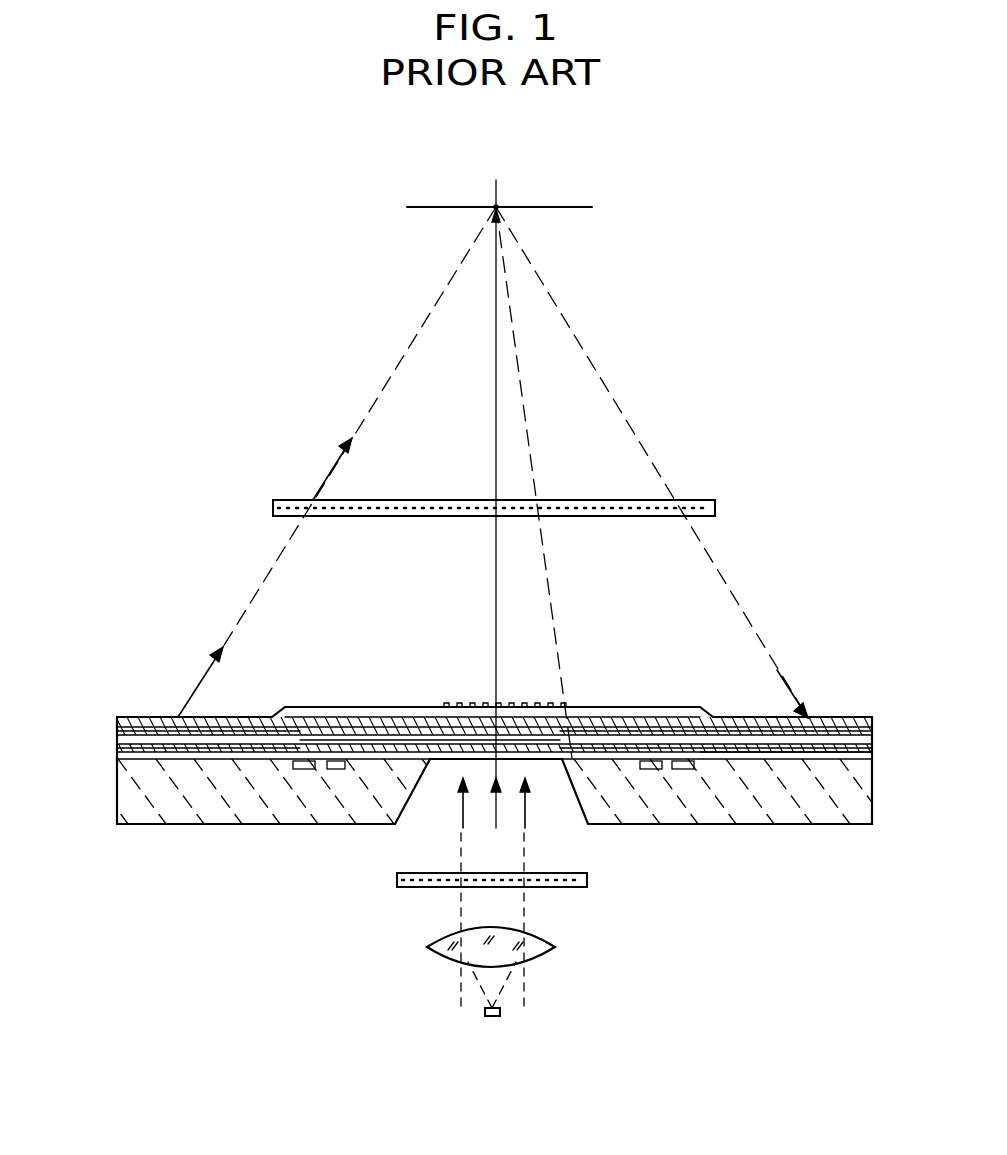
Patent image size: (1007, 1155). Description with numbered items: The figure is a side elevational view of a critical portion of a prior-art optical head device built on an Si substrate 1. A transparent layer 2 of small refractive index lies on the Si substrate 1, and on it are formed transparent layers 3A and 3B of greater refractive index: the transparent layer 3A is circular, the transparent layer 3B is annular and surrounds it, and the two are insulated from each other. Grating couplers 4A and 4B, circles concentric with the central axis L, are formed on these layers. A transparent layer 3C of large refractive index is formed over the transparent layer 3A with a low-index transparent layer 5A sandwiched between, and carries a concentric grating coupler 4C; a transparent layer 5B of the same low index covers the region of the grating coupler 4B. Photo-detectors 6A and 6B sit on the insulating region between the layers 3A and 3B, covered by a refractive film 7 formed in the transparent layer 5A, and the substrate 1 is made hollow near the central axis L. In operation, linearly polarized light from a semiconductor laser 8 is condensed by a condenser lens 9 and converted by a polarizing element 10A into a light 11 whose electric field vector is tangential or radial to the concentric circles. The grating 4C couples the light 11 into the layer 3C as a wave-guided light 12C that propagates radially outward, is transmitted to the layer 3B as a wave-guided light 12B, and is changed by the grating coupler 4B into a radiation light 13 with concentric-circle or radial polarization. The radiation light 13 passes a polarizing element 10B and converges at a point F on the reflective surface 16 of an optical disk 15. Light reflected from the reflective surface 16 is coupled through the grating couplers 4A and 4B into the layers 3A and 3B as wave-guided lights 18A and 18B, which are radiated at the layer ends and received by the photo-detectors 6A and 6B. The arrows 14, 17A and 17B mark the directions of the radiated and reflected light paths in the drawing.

The Si substrate 1 is at (190, 824).
The transparent layer 2 is at (116, 752).
The transparent layer 3A is at (398, 756).
The transparent layer 3B is at (116, 738).
The transparent layer 3C is at (637, 713).
The grating coupler 4A is at (345, 708).
The grating coupler 4B is at (148, 723).
The grating coupler 4C is at (460, 707).
The transparent layer 5A is at (510, 710).
The transparent layer 5B is at (236, 728).
The photo-detector 6A is at (650, 770).
The photo-detector 6B is at (683, 770).
The refractive film 7 is at (682, 713).
The semiconductor laser 8 is at (485, 1012).
The condenser lens 9 is at (437, 950).
The polarizing element 10A is at (400, 885).
The polarizing element 10B is at (688, 502).
The light 11 is at (490, 807).
The wave-guided light 12B is at (236, 745).
The wave-guided light 12C is at (377, 712).
The radiation light 13 is at (205, 670).
The diffracted light 14 is at (328, 475).
The optical disk 15 is at (463, 202).
The reflective surface 16 is at (557, 210).
The light beam 17A is at (560, 688).
The light beam 17B is at (785, 672).
The wave-guided light 18A is at (603, 763).
The wave-guided light 18B is at (760, 763).
The central axis L is at (493, 577).
The point of convergence F is at (503, 200).